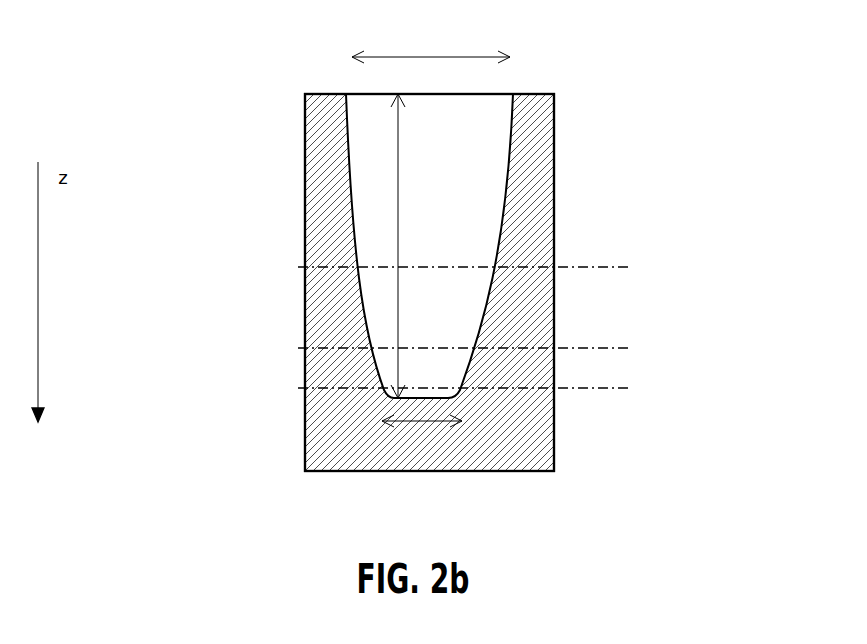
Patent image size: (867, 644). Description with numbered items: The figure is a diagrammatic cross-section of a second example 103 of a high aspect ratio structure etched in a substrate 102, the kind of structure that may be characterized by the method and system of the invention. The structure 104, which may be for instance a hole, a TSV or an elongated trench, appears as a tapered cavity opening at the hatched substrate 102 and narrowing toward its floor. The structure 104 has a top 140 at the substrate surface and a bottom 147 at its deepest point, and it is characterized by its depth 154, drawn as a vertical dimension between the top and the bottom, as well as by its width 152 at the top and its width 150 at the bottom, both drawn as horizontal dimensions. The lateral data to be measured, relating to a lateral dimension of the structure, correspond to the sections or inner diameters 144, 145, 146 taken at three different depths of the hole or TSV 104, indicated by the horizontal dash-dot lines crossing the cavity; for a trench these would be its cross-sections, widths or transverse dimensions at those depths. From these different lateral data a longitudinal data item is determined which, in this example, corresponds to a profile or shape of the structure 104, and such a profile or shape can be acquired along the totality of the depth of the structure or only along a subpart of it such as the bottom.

The second example 103 is at (143, 42).
The substrate 102 is at (305, 187).
The structure 104 is at (370, 113).
The top 140 is at (370, 91).
The width at the top 152 is at (423, 57).
The depth 154 is at (397, 120).
The inner diameter 144 is at (612, 262).
The inner diameter 145 is at (615, 345).
The inner diameter 146 is at (612, 385).
The bottom 147 is at (415, 400).
The width at the bottom 150 is at (435, 421).